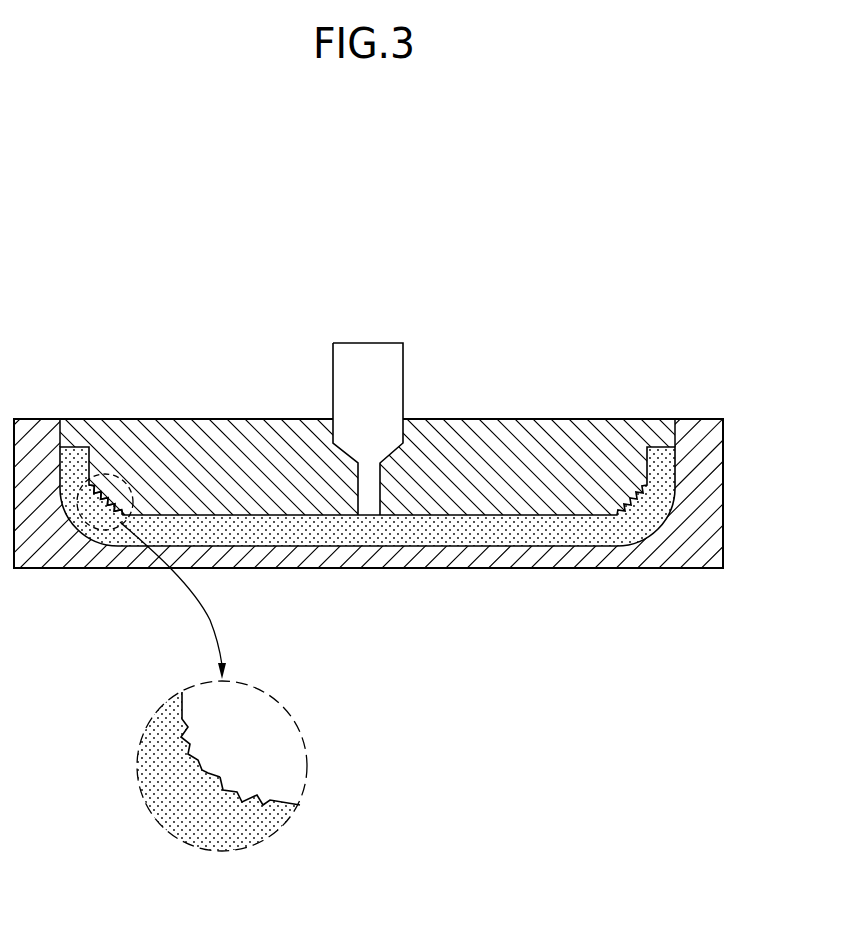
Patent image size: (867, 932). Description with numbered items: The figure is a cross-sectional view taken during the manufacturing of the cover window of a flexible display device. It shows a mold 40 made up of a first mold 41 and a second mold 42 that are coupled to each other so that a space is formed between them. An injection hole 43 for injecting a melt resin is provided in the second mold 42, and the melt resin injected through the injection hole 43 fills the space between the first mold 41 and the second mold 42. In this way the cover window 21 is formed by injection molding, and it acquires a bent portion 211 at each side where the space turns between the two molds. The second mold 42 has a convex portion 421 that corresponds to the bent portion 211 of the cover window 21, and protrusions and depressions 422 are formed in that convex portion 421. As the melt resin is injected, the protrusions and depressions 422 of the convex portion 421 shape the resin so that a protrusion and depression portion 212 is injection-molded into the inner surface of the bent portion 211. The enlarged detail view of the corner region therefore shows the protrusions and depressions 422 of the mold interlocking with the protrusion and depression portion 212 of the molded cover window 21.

The mold 40 is at (540, 628).
The first mold 41 is at (460, 555).
The second mold 42 is at (525, 490).
The injection hole 43 is at (367, 363).
The cover window 21 is at (353, 549).
The bent portion 211 is at (117, 517).
The protrusion and depression portion 212 is at (226, 770).
The convex portion 421 is at (108, 500).
The protrusions and depressions 422 is at (196, 776).